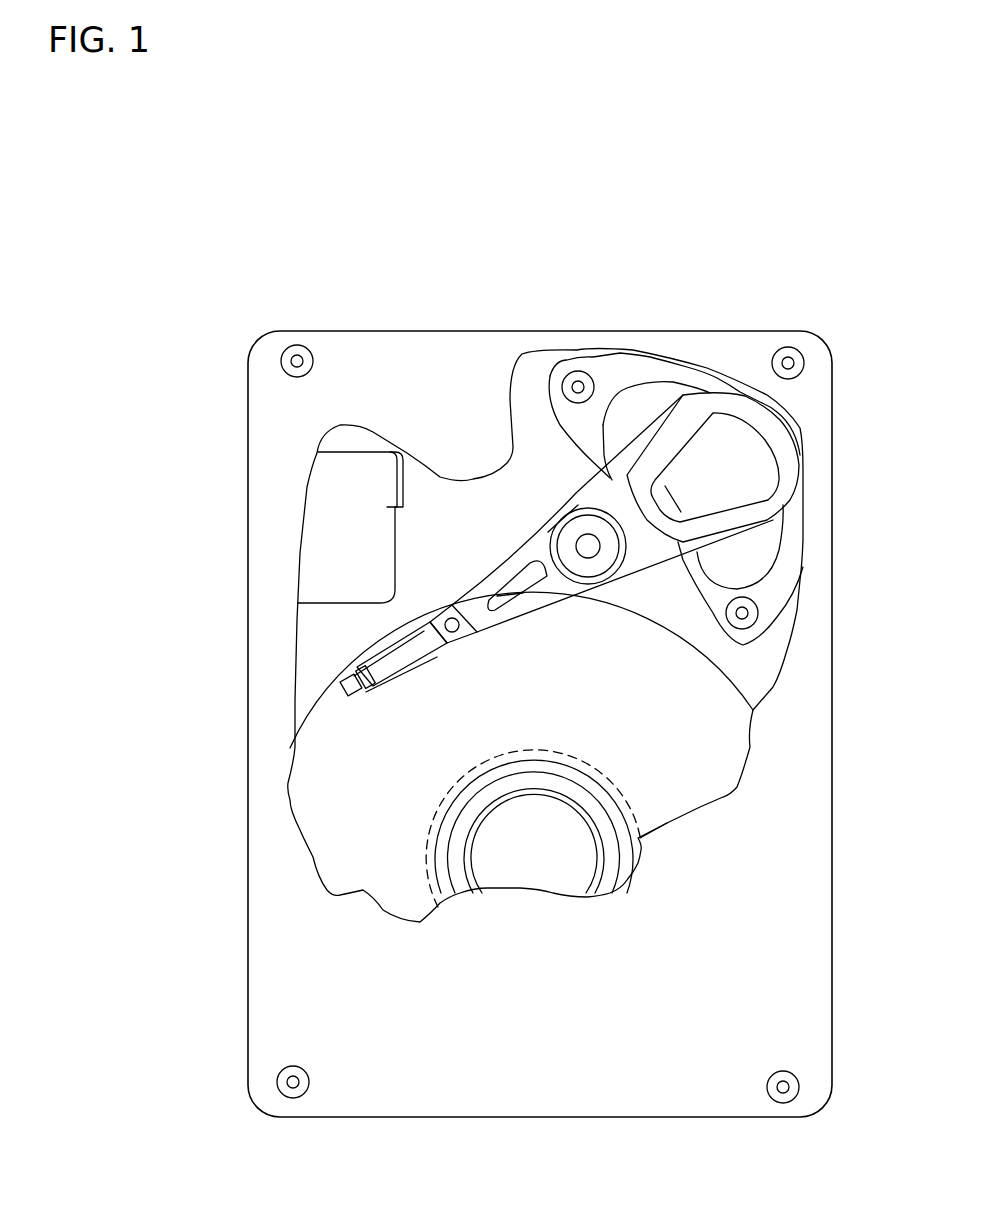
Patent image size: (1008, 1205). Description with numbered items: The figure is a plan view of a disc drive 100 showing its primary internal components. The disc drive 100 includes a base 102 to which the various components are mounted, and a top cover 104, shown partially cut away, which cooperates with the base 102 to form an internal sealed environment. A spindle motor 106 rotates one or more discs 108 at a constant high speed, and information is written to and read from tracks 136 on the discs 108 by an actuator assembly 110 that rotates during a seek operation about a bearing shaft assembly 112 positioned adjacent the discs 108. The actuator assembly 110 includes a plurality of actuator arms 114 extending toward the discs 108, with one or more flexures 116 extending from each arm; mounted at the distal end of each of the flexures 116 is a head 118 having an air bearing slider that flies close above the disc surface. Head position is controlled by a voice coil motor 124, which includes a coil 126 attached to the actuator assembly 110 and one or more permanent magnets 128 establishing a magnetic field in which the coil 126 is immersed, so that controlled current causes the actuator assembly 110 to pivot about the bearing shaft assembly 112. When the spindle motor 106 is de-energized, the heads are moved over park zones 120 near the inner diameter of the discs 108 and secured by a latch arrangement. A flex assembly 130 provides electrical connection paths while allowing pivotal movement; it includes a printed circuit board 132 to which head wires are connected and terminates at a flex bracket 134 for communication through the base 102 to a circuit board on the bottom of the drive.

The disc drive 100 is at (243, 288).
The base 102 is at (312, 635).
The top cover 104 is at (284, 965).
The spindle motor 106 is at (541, 868).
The discs 108 is at (702, 788).
The actuator assembly 110 is at (555, 587).
The bearing shaft assembly 112 is at (590, 550).
The actuator arms 114 is at (510, 617).
The flexures 116 is at (373, 665).
The head 118 is at (345, 690).
The park zones 120 is at (423, 845).
The voice coil motor 124 is at (656, 338).
The coil 126 is at (780, 470).
The permanent magnets 128 is at (617, 412).
The flex assembly 130 is at (510, 537).
The printed circuit board 132 is at (540, 482).
The flex bracket 134 is at (337, 507).
The tracks 136 is at (628, 830).